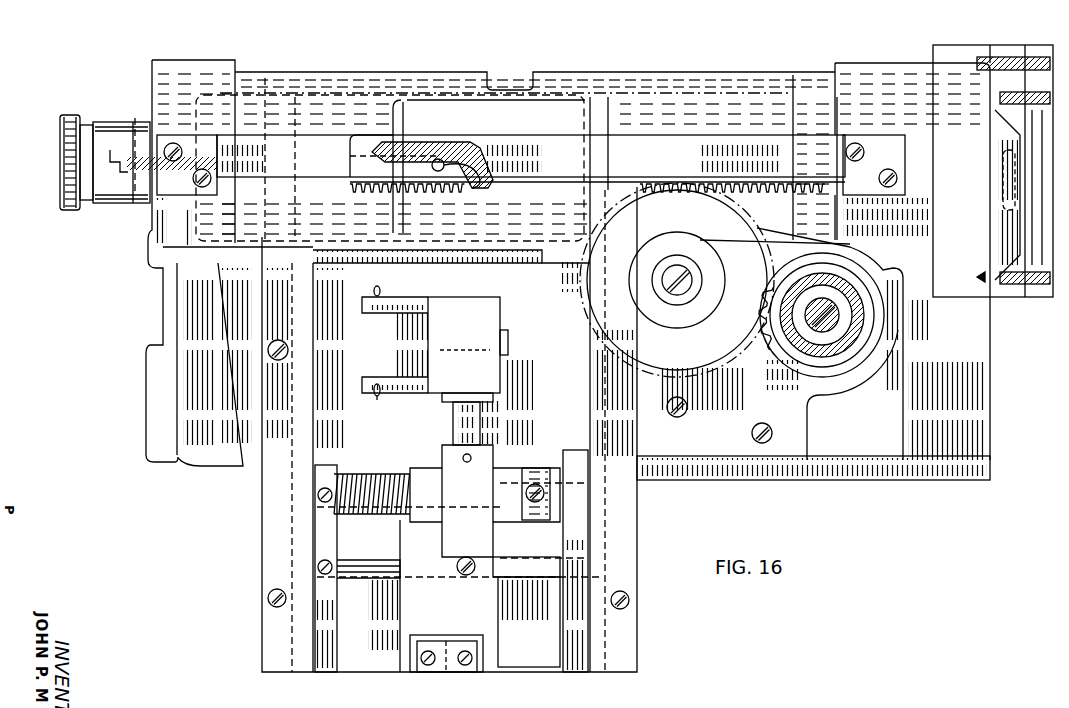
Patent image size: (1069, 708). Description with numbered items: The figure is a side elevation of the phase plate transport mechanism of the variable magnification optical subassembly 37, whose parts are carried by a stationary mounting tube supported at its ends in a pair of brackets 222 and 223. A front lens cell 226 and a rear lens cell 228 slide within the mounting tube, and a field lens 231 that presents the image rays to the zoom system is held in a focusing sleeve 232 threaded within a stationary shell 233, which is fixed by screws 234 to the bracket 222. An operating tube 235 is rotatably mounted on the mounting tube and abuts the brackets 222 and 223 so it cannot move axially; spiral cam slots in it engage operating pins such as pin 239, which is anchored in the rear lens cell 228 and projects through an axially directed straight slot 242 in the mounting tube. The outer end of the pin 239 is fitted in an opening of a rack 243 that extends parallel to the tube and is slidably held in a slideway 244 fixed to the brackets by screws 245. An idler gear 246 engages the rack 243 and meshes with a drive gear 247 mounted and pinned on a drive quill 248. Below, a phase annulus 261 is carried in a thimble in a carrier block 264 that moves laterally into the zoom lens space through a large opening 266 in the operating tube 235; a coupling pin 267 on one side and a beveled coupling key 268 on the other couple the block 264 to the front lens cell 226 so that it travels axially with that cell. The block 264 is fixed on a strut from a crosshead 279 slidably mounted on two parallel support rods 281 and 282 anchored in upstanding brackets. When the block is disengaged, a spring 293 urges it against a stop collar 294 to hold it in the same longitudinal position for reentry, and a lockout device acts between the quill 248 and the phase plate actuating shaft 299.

The subassembly 37 is at (596, 54).
The bracket 222 is at (167, 76).
The bracket 223 is at (843, 63).
The front lens cell 226 is at (345, 100).
The rear lens cell 228 is at (423, 100).
The field lens 231 is at (136, 118).
The focusing sleeve 232 is at (60, 154).
The stationary shell 233 is at (122, 203).
The screws 234 is at (128, 166).
The operating tube 235 is at (744, 121).
The operating pin 239 is at (455, 145).
The straight slot 242 is at (466, 172).
The rack 243 is at (422, 194).
The slideway 244 is at (348, 166).
The screws 245 is at (174, 143).
The idler gear 246 is at (742, 347).
The drive gear 247 is at (877, 346).
The drive quill 248 is at (825, 336).
The phase plate actuating shaft 299 is at (845, 336).
The phase annulus 261 is at (510, 340).
The carrier block 264 is at (484, 346).
The opening 266 is at (545, 255).
The coupling pin 267 is at (375, 288).
The coupling key 268 is at (377, 400).
The crosshead 279 is at (486, 532).
The support rod 281 is at (562, 483).
The support rod 282 is at (545, 573).
The spring 293 is at (389, 514).
The stop collar 294 is at (542, 518).